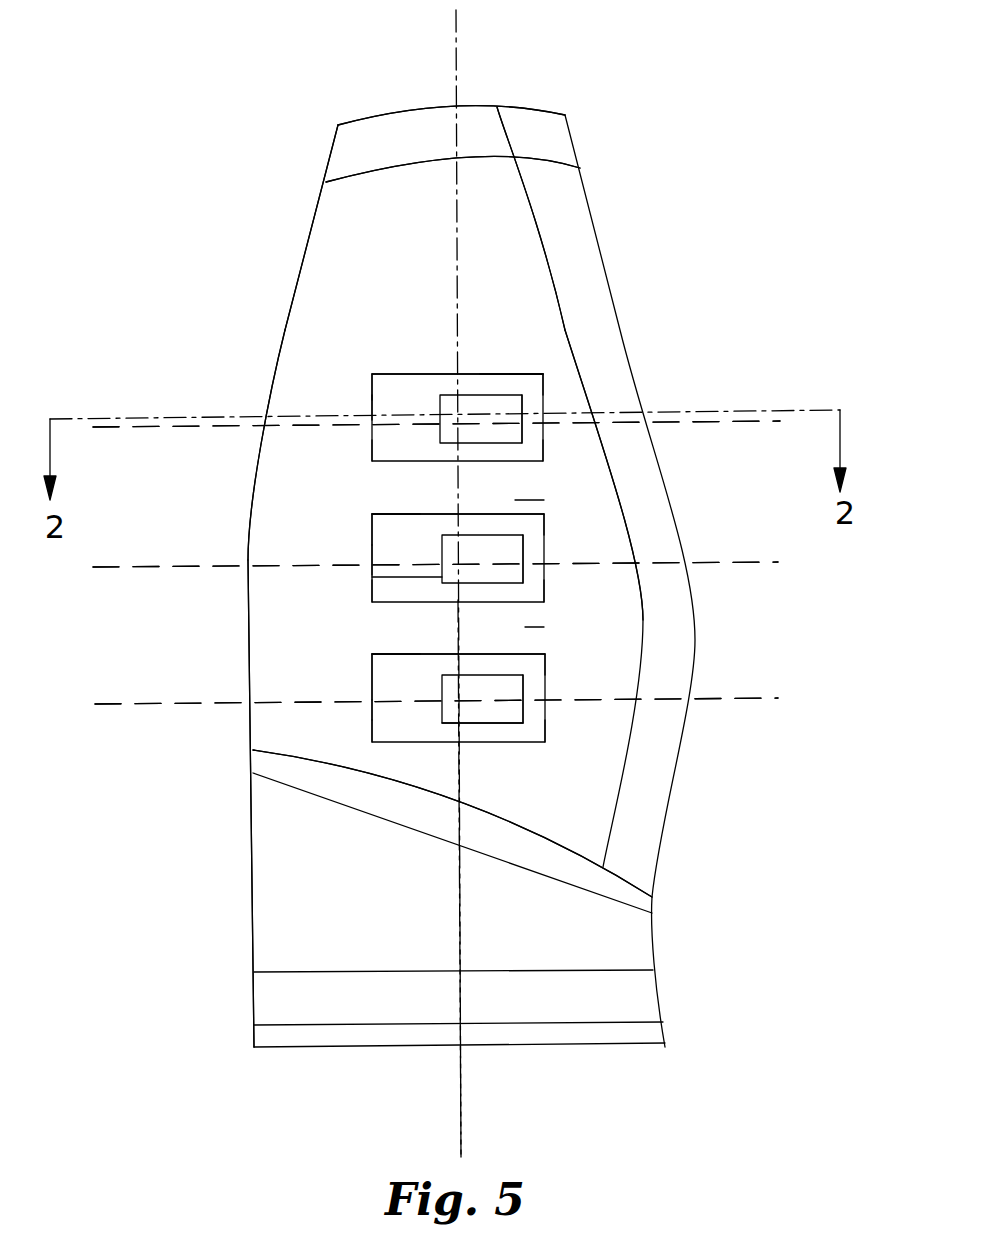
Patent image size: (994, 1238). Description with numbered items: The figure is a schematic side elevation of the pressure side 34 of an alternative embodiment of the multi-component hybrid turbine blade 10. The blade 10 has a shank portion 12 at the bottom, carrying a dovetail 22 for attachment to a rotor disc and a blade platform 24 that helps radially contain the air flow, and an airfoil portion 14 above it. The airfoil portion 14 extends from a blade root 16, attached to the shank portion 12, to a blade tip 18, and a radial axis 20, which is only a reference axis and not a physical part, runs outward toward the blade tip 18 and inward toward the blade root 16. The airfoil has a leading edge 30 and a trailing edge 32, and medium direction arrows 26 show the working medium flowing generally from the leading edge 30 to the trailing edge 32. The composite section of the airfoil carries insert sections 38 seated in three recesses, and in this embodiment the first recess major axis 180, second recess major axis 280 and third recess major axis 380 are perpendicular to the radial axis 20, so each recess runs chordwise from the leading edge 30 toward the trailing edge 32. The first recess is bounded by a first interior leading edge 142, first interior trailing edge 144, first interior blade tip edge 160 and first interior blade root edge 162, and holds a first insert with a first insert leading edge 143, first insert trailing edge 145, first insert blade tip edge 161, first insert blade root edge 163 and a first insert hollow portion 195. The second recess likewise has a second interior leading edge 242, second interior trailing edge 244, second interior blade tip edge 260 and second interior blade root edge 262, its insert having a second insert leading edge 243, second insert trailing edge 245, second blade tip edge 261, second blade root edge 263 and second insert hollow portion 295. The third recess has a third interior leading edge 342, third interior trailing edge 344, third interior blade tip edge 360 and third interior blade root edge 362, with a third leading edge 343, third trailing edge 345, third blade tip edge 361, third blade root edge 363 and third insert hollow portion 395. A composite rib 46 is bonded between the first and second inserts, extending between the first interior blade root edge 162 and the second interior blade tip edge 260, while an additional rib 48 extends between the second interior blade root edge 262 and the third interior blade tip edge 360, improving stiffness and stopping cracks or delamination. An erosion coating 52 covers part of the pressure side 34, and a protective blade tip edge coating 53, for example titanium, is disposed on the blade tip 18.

The multi-component hybrid turbine blade 10 is at (318, 25).
The shank portion 12 is at (290, 905).
The airfoil portion 14 is at (152, 465).
The blade root 16 is at (567, 848).
The blade tip 18 is at (372, 120).
The radial axis 20 is at (462, 1115).
The dovetail 22 is at (267, 1007).
The blade platform 24 is at (310, 780).
The medium direction arrows 26 is at (648, 264).
The leading edge 30 is at (583, 180).
The trailing edge 32 is at (287, 310).
The pressure side 34 is at (325, 303).
The insert section 38 is at (458, 558).
The rib 46 is at (515, 500).
The additional rib 48 is at (525, 627).
The erosion coating 52 is at (512, 237).
The protective blade tip edge coating 53 is at (482, 137).
The first interior leading edge 142 is at (533, 400).
The first insert leading edge 143 is at (545, 382).
The first interior trailing edge 144 is at (372, 407).
The first insert trailing edge 145 is at (372, 377).
The first interior blade tip edge 160 is at (403, 374).
The first insert blade tip edge 161 is at (524, 374).
The first interior blade root edge 162 is at (372, 447).
The first insert blade root edge 163 is at (545, 458).
The first recess major axis 180 is at (782, 423).
The first insert hollow portion 195 is at (497, 374).
The second interior leading edge 242 is at (533, 540).
The second insert leading edge 243 is at (545, 520).
The second interior trailing edge 244 is at (372, 533).
The second insert trailing edge 245 is at (372, 560).
The second interior blade tip edge 260 is at (425, 514).
The second blade tip edge 261 is at (408, 514).
The second interior blade root edge 262 is at (372, 590).
The second blade root edge 263 is at (545, 603).
The second recess major axis 280 is at (770, 562).
The second insert hollow portion 295 is at (372, 577).
The third interior leading edge 342 is at (533, 680).
The third leading edge 343 is at (545, 662).
The third interior trailing edge 344 is at (372, 680).
The third trailing edge 345 is at (372, 727).
The third interior blade tip edge 360 is at (425, 654).
The third blade tip edge 361 is at (385, 654).
The third interior blade root edge 362 is at (372, 713).
The third blade root edge 363 is at (545, 742).
The third recess major axis 380 is at (772, 698).
The third insert hollow portion 395 is at (503, 723).